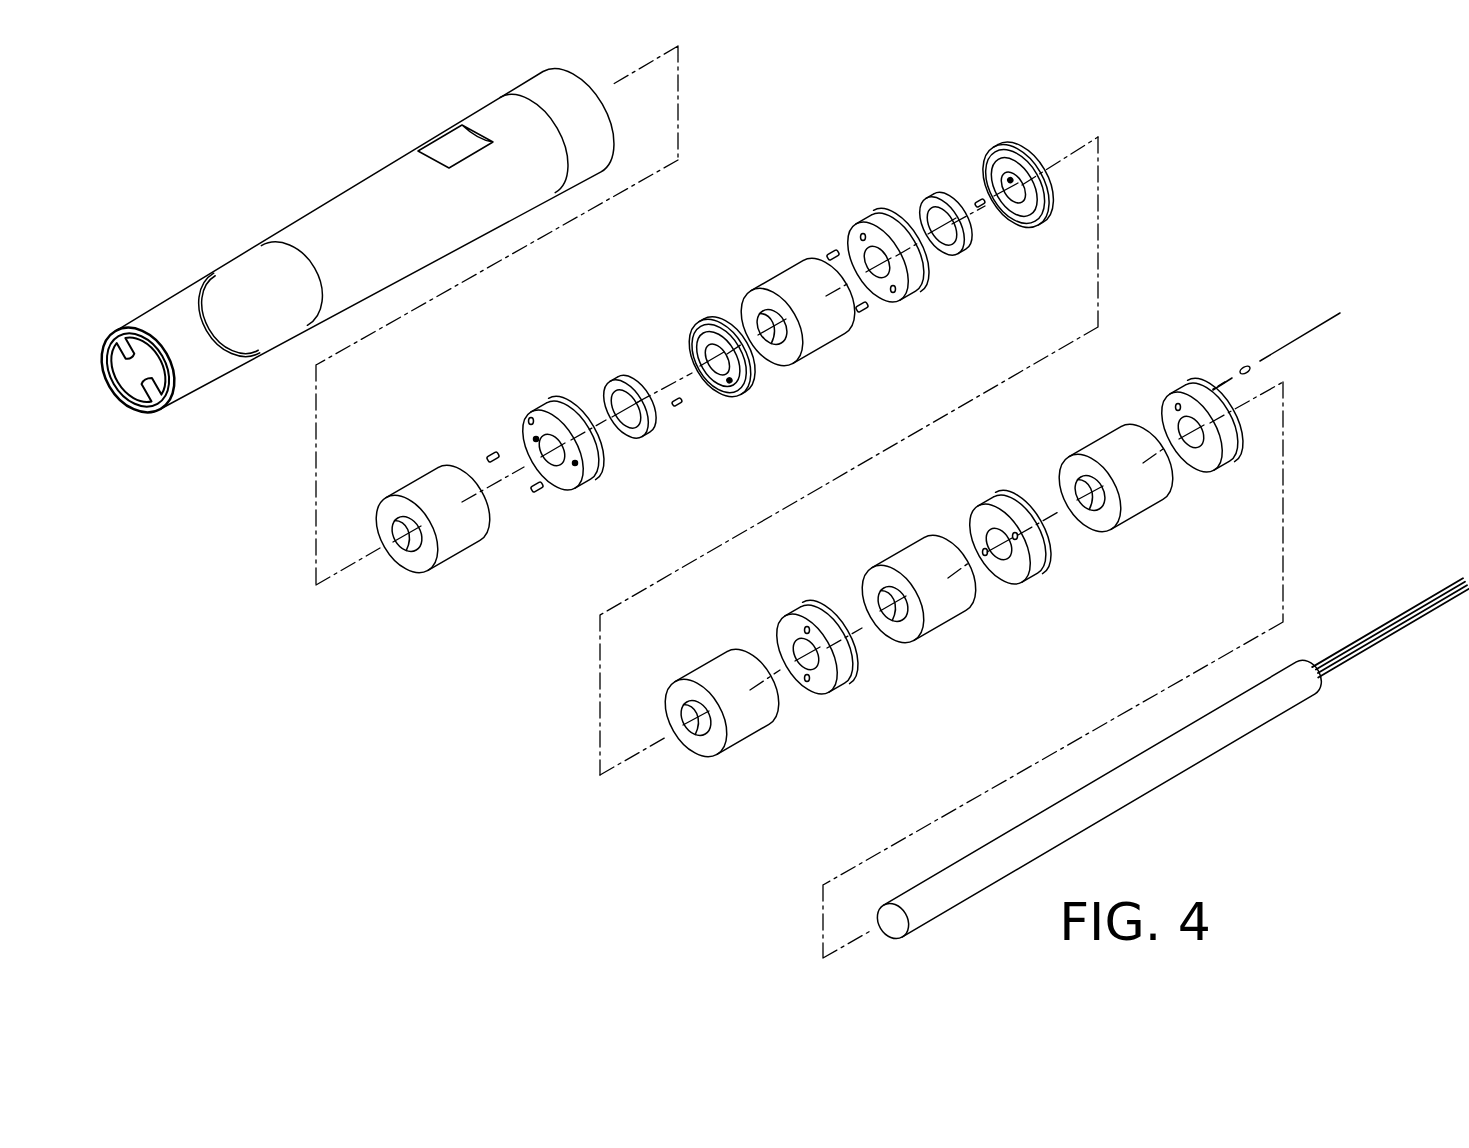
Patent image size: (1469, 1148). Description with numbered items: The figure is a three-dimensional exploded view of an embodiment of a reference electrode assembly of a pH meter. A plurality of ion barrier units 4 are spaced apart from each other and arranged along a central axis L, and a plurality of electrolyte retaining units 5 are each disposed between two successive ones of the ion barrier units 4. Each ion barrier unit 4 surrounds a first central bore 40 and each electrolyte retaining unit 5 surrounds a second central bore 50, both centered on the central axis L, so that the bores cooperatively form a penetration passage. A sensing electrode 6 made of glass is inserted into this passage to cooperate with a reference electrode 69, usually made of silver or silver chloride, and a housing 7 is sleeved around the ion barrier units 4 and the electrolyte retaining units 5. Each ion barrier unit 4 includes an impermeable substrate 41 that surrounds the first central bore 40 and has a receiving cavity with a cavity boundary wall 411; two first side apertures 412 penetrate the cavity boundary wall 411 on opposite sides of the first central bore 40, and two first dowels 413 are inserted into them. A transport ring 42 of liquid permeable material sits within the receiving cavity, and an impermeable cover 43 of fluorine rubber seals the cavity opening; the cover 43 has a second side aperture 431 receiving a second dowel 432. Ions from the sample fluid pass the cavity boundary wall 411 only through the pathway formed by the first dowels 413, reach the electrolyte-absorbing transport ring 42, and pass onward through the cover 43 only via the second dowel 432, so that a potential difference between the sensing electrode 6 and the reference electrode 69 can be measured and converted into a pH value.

The central axis L is at (638, 88).
The housing 7 is at (368, 183).
The electrolyte retaining unit 5 is at (402, 458).
The second central bore 50 is at (405, 550).
The ion barrier unit 4 is at (837, 435).
The substrate 41 is at (566, 408).
The first central bore 40 is at (572, 455).
The cavity boundary wall 411 is at (530, 417).
The first side aperture 412 is at (533, 437).
The first dowel 413 is at (489, 453).
The transport ring 42 is at (632, 380).
The cover 43 is at (863, 312).
The second side aperture 431 is at (754, 401).
The second dowel 432 is at (681, 407).
The reference electrode 69 is at (1241, 366).
The sensing electrode 6 is at (1268, 718).